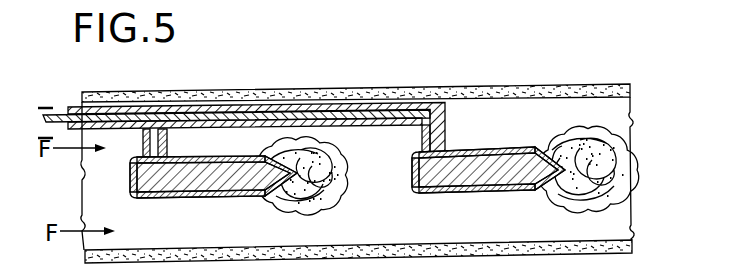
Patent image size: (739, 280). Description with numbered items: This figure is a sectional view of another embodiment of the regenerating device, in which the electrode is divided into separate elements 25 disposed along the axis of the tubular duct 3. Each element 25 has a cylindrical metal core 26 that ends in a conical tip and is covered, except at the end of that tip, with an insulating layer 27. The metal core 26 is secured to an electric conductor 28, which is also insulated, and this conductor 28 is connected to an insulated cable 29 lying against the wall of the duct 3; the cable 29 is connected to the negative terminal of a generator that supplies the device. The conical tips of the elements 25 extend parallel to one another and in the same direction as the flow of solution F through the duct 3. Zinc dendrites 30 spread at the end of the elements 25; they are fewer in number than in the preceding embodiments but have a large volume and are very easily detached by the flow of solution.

The tubular duct 3 is at (387, 92).
The elements 25 is at (503, 146).
The metal core 26 is at (183, 178).
The insulating layer 27 is at (260, 186).
The electric conductor 28 is at (168, 145).
The insulated cable 29 is at (296, 112).
The zinc dendrites 30 is at (333, 178).